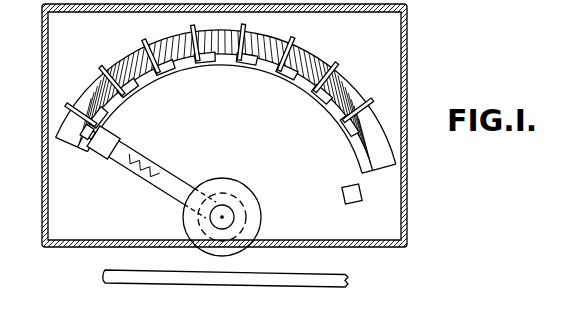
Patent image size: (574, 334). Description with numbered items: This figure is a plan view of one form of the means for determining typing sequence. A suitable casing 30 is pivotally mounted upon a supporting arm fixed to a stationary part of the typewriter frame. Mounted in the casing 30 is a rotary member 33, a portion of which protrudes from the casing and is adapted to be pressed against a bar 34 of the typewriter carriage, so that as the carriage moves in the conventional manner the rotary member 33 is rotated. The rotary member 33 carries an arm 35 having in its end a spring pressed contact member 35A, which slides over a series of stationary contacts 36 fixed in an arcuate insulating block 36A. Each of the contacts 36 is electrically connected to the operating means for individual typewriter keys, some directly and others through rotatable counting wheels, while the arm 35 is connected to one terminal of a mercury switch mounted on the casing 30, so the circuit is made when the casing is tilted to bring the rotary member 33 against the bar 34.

The casing 30 is at (406, 208).
The rotary member 33 is at (256, 197).
The bar 34 is at (320, 287).
The arm 35 is at (178, 176).
The spring pressed contact member 35A is at (104, 131).
The stationary contacts 36 is at (157, 76).
The arcuate insulating block 36A is at (355, 93).